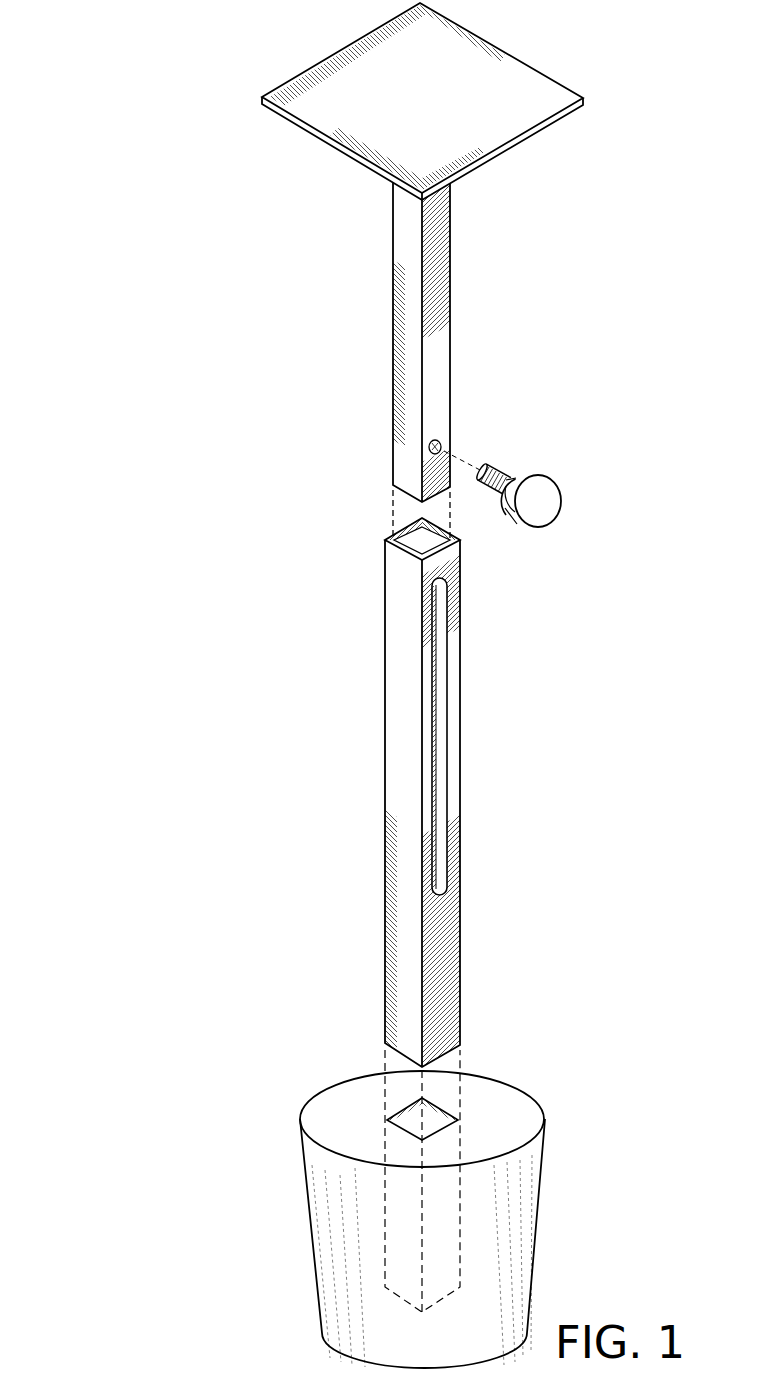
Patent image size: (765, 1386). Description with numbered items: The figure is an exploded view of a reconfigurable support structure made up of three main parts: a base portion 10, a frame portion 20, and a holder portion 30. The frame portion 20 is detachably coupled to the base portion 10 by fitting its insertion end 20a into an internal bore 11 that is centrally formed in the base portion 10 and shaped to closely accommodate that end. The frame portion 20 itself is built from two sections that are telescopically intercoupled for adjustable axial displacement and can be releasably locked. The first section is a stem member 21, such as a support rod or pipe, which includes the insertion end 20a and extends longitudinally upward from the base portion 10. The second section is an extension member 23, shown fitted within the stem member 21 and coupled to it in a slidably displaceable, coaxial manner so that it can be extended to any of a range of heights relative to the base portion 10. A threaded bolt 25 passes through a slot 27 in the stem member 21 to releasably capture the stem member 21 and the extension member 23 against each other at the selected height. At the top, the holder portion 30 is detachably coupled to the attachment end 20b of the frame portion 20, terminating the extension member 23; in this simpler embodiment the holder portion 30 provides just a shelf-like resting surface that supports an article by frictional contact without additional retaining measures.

The base portion 10 is at (362, 1209).
The internal bore 11 is at (457, 1198).
The frame portion 20 is at (293, 503).
The insertion end 20a is at (442, 792).
The attachment end 20b is at (501, 333).
The stem member 21 is at (385, 722).
The extension member 23 is at (450, 347).
The threaded bolt 25 is at (560, 488).
The slot 27 is at (438, 720).
The holder portion 30 is at (235, 55).